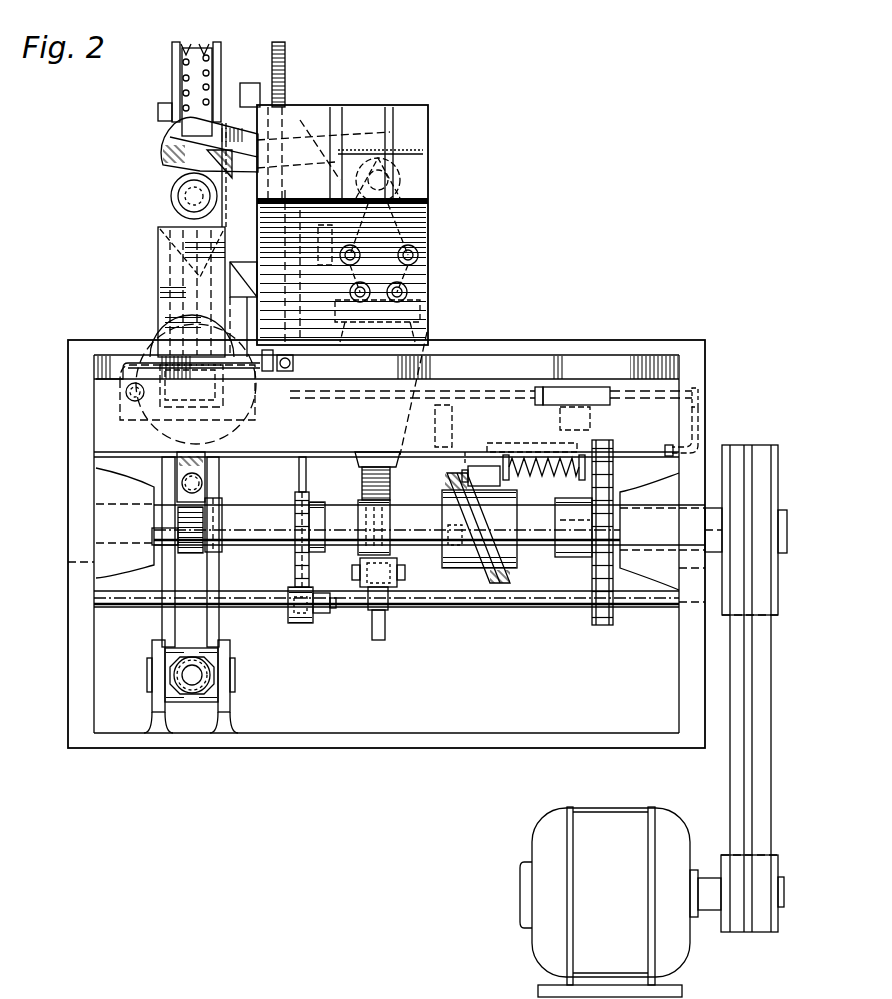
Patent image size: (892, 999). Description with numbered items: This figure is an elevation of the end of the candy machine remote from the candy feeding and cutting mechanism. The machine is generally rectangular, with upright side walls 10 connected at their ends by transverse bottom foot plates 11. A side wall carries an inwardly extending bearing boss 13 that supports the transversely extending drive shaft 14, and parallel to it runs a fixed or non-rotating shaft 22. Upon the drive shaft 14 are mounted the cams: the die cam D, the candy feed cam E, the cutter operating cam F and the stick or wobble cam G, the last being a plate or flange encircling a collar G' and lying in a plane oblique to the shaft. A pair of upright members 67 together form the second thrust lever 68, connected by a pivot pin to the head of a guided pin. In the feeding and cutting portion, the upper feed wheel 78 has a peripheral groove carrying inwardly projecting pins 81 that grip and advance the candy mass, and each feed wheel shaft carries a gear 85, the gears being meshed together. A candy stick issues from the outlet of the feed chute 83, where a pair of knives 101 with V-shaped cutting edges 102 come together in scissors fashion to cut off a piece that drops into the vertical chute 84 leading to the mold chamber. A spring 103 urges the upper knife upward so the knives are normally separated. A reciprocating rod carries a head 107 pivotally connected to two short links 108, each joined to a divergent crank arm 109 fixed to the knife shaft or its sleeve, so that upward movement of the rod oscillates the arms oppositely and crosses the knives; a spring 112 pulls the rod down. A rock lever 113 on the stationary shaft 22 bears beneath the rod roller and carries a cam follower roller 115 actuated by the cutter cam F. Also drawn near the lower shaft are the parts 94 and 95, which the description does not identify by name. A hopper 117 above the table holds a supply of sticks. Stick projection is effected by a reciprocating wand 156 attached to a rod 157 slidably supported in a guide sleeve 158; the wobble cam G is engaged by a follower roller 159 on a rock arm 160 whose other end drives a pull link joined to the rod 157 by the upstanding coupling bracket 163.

The side wall 10 is at (72, 670).
The bottom foot plate 11 is at (153, 738).
The bearing boss 13 is at (100, 492).
The drive shaft 14 is at (261, 501).
The fixed shaft 22 is at (258, 600).
The upright member 67 is at (214, 577).
The second thrust lever 68 is at (157, 625).
The upper feed wheel 78 is at (220, 53).
The pins 81 is at (204, 52).
The feed chute 83 is at (171, 191).
The chute 84 is at (160, 302).
The gear 85 is at (285, 57).
The bearing sleeve 94 is at (320, 613).
The bearing 95 is at (300, 623).
The knife 101 is at (168, 144).
The V-shaped cutting edge 102 is at (162, 164).
The spring 103 is at (432, 146).
The head 107 is at (430, 308).
The link 108 is at (430, 272).
The crank arm 109 is at (430, 234).
The spring 112 is at (390, 478).
The rock lever 113 is at (382, 632).
The cam follower roller 115 is at (384, 562).
The hopper 117 is at (432, 126).
The wand 156 is at (482, 393).
The rod 157 is at (632, 394).
The guide sleeve 158 is at (568, 386).
The follower roller 159 is at (476, 466).
The rock arm 160 is at (493, 463).
The coupling bracket 163 is at (700, 428).
The die cam D is at (176, 465).
The candy feed cam E is at (301, 549).
The cutter operating cam F is at (370, 520).
The wobble cam G is at (477, 548).
The collar G' is at (478, 556).